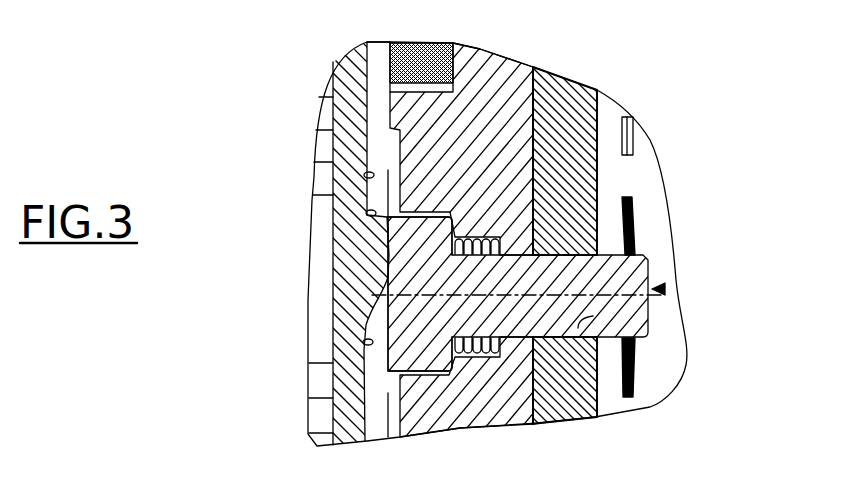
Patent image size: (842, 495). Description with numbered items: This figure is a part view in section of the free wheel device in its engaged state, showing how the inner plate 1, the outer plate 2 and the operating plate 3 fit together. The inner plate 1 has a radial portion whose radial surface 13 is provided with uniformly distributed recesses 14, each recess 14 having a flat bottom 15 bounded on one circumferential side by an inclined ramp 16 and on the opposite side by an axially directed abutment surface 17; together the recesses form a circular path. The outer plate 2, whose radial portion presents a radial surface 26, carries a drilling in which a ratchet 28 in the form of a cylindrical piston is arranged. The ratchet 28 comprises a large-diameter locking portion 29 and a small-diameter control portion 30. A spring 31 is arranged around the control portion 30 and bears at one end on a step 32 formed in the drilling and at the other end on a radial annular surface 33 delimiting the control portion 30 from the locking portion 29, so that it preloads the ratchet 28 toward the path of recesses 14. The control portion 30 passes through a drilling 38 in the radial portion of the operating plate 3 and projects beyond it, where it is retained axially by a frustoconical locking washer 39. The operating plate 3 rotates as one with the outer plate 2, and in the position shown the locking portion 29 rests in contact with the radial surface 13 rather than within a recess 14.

The inner plate 1 is at (322, 94).
The outer plate 2 is at (477, 143).
The operating plate 3 is at (570, 108).
The radial surface 13 is at (388, 247).
The recess 14 is at (377, 147).
The flat bottom 15 is at (364, 176).
The inclined ramp 16 is at (364, 313).
The abutment surface 17 is at (366, 213).
The radial surface 26 is at (393, 66).
The ratchet 28 is at (663, 289).
The locking portion 29 is at (388, 63).
The control portion 30 is at (461, 230).
The spring 31 is at (540, 368).
The step 32 is at (497, 350).
The radial annular surface 33 is at (393, 390).
The drilling 38 is at (593, 316).
The frustoconical locking washer 39 is at (625, 142).